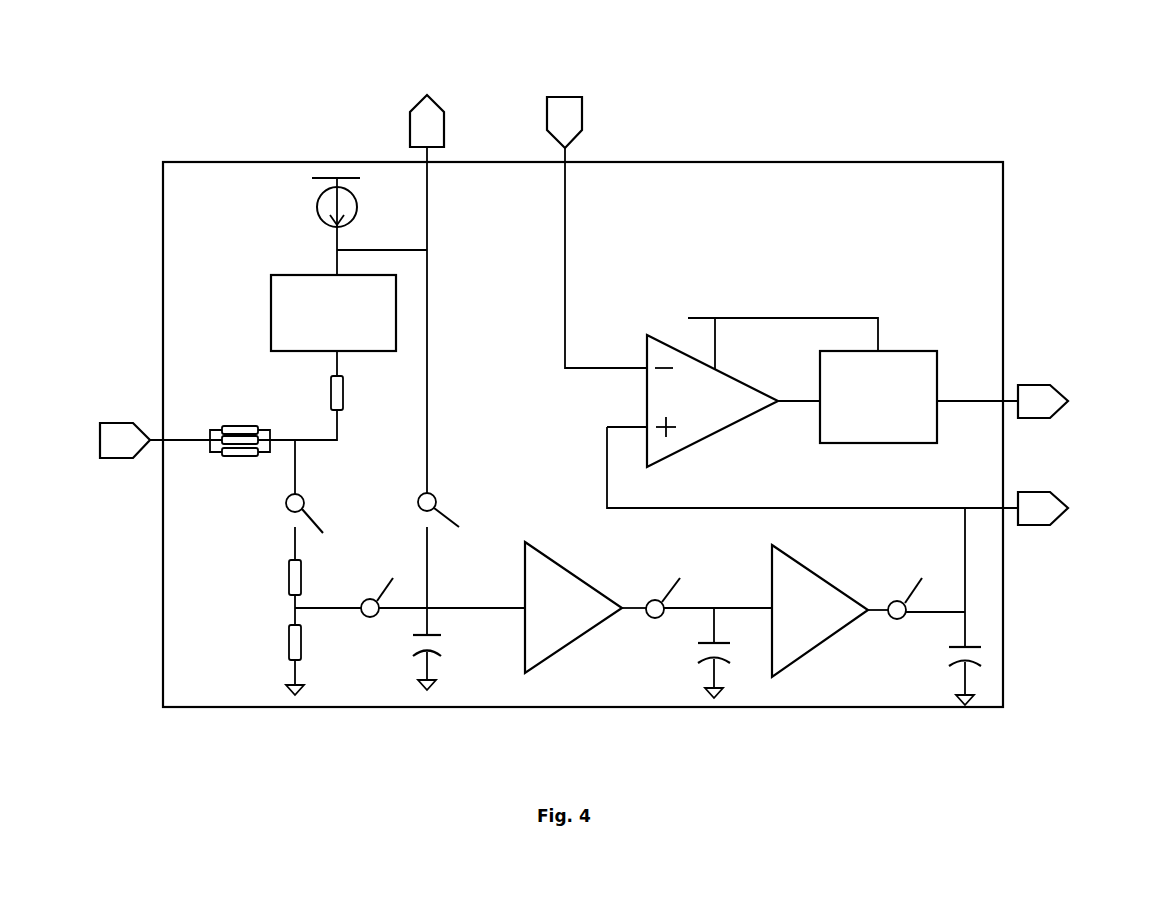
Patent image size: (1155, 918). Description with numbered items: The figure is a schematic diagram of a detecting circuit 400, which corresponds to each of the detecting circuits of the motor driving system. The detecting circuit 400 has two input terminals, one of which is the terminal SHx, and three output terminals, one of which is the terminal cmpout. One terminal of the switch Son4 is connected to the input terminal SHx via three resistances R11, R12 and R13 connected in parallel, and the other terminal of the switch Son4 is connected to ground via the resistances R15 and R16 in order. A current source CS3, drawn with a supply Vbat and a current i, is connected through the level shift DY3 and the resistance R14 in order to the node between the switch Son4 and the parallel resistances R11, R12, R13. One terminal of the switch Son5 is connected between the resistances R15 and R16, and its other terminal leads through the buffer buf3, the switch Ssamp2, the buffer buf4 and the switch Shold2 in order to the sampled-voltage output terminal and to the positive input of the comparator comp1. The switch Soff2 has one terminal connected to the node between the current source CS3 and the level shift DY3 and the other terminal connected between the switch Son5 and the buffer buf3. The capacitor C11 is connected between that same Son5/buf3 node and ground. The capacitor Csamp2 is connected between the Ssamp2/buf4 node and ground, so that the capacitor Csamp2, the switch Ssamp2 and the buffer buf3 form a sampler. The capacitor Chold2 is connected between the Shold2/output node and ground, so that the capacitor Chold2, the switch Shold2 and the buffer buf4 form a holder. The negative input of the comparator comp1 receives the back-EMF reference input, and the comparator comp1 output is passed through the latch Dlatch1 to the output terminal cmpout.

The detecting circuit 400 is at (566, 53).
The input terminal SHx is at (138, 440).
The output terminal cmpout is at (1013, 388).
The current source CS3 is at (344, 221).
The battery supply Vbat is at (311, 178).
The source current i is at (350, 226).
The level shift DY3 is at (333, 313).
The resistance R11 is at (240, 392).
The resistance R12 is at (252, 407).
The resistance R13 is at (240, 426).
The resistance R14 is at (342, 395).
The resistance R15 is at (273, 592).
The resistance R16 is at (274, 660).
The switch Son4 is at (334, 500).
The switch Soff2 is at (465, 442).
The switch Son5 is at (410, 591).
The capacitor C11 is at (404, 662).
The buffer buf3 is at (585, 607).
The switch Ssamp2 is at (691, 586).
The capacitor Csamp2 is at (665, 653).
The buffer buf4 is at (830, 611).
The switch Shold2 is at (911, 586).
The capacitor Chold2 is at (920, 606).
The comparator comp1 is at (713, 401).
The latch Dlatch1 is at (878, 397).